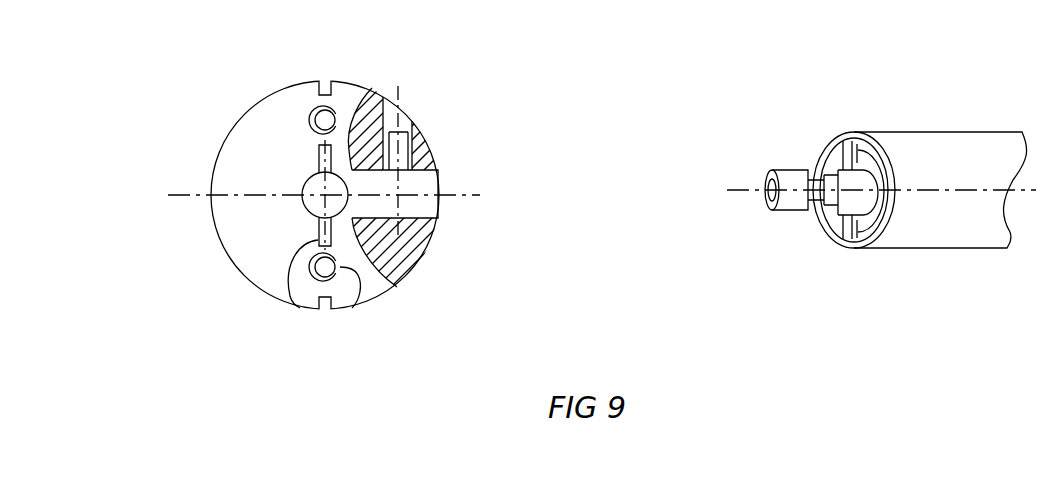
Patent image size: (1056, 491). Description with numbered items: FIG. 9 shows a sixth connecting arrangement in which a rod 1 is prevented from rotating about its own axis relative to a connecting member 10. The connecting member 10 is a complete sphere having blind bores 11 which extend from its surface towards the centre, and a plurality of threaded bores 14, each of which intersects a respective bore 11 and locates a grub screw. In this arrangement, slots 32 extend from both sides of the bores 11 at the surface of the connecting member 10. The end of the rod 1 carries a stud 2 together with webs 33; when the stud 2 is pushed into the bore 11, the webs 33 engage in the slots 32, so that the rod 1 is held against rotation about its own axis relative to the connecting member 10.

The rod 1 is at (948, 132).
The stud 2 is at (800, 176).
The connecting member 10 is at (368, 91).
The blind bore 11 is at (312, 206).
The threaded bore 14 is at (387, 117).
The slot 32 is at (324, 82).
The web 33 is at (857, 163).